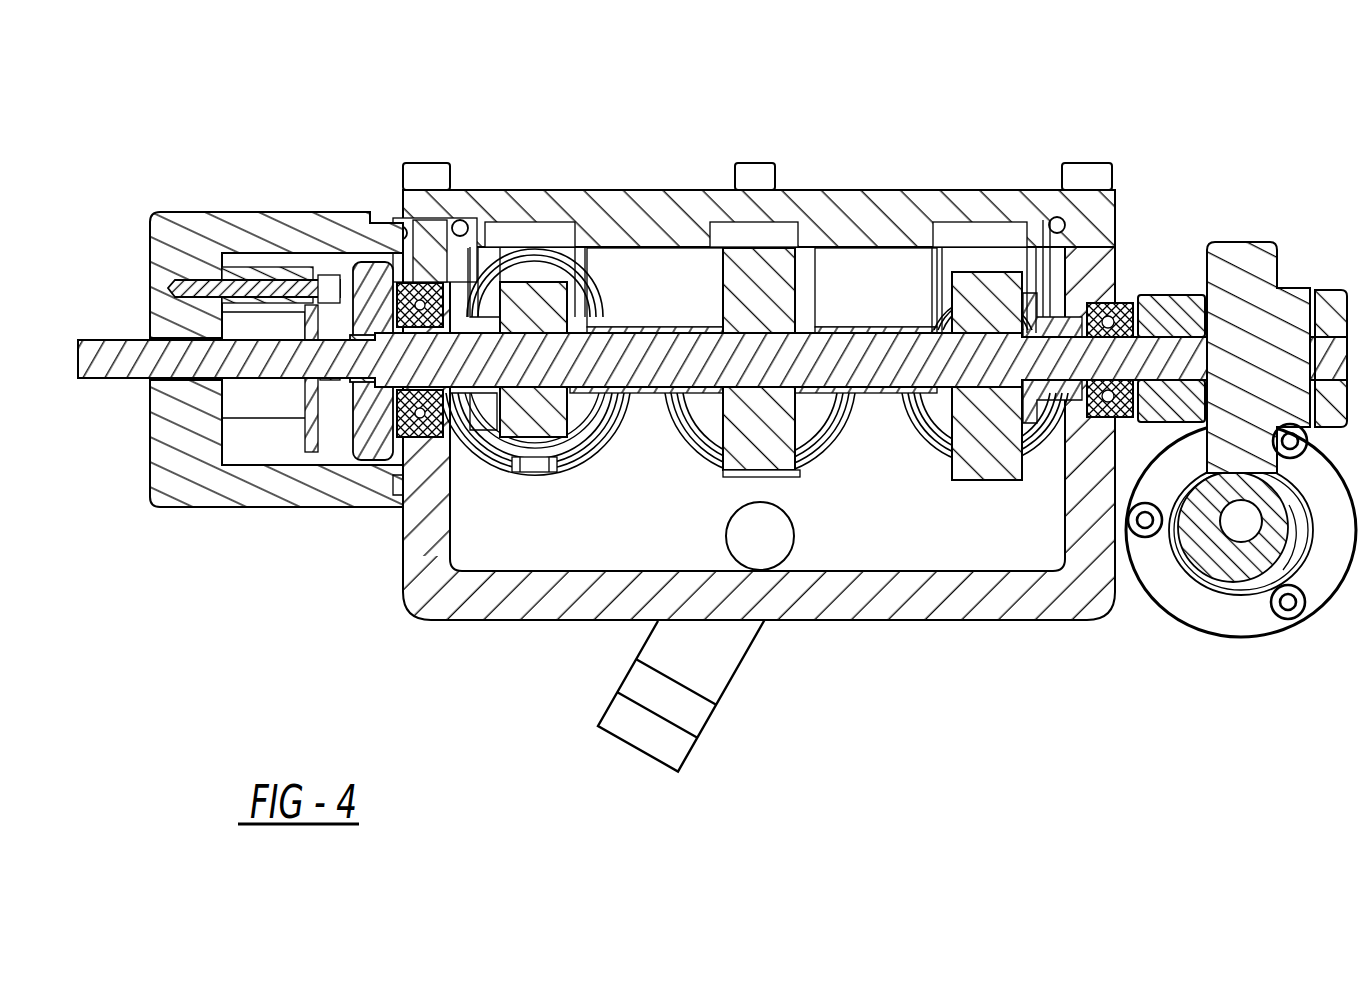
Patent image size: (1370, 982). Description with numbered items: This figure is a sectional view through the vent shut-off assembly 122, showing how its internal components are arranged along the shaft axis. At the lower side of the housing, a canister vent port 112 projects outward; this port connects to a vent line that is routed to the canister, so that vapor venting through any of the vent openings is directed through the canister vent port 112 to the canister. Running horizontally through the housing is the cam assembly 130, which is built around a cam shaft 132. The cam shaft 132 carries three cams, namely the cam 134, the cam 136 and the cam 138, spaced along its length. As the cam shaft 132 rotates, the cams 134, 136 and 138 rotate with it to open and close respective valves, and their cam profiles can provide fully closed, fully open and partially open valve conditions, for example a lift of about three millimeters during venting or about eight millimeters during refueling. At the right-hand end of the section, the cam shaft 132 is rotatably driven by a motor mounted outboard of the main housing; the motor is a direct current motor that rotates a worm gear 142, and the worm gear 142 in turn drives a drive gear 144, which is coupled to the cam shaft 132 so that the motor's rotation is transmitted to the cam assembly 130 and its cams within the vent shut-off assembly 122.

The canister vent port 112 is at (708, 723).
The pump assembly 122 is at (717, 407).
The cam assembly 130 is at (977, 235).
The cam shaft 132 is at (652, 352).
The cam 134 is at (530, 305).
The cam 136 is at (753, 275).
The cam 138 is at (978, 303).
The worm gear 142 is at (1232, 562).
The drive gear 144 is at (1247, 255).